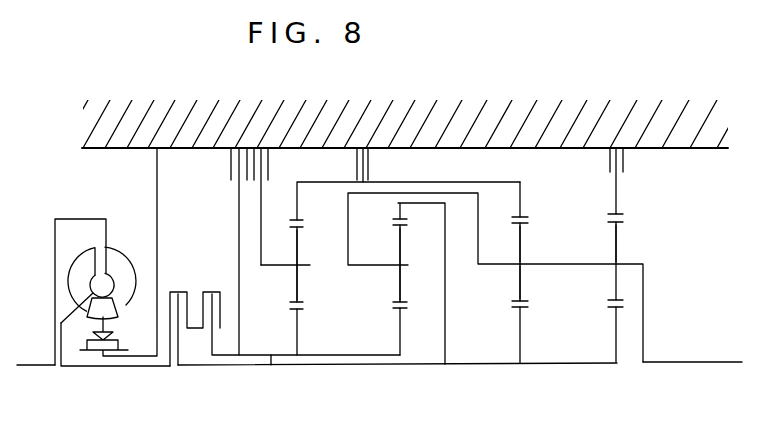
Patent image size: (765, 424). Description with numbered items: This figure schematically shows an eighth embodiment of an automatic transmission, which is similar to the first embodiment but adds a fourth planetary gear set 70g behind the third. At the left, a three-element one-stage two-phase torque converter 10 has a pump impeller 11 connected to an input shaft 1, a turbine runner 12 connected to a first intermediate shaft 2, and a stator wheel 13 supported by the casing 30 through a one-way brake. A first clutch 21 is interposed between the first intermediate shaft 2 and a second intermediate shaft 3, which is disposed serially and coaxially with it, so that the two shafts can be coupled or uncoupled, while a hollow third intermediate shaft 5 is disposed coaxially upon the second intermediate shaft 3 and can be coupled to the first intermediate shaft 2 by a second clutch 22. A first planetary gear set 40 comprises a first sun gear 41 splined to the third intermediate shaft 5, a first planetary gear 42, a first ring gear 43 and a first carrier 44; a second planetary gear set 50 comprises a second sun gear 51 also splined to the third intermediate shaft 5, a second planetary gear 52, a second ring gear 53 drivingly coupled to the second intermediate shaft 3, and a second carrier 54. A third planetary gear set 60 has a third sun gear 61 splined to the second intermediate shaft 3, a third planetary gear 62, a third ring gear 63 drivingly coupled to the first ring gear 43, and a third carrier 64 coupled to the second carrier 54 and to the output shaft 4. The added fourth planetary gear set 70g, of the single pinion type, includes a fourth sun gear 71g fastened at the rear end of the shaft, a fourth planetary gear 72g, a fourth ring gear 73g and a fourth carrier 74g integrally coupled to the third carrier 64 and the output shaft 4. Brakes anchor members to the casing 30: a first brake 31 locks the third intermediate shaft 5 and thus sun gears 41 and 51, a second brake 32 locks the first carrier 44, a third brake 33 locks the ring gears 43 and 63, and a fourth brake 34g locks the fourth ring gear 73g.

The input shaft 1 is at (27, 368).
The first intermediate shaft 2 is at (100, 368).
The second intermediate shaft 3 is at (284, 328).
The output shaft 4 is at (700, 363).
The third intermediate shaft 5 is at (271, 366).
The torque converter 10 is at (126, 259).
The pump impeller 11 is at (117, 285).
The turbine runner 12 is at (83, 277).
The stator wheel 13 is at (88, 307).
The first clutch 21 is at (177, 290).
The second clutch 22 is at (210, 290).
The casing 30 is at (338, 91).
The first brake 31 is at (236, 146).
The second brake 32 is at (259, 146).
The third brake 33 is at (362, 146).
The fourth brake 34g is at (613, 146).
The first planetary gear set 40 is at (388, 293).
The first sun gear 41 is at (298, 318).
The first planetary gear 42 is at (297, 282).
The first ring gear 43 is at (297, 208).
The first carrier 44 is at (273, 266).
The second planetary gear set 50 is at (434, 278).
The second sun gear 51 is at (412, 319).
The second planetary gear 52 is at (400, 268).
The second ring gear 53 is at (402, 211).
The second carrier 54 is at (367, 264).
The third planetary gear set 60 is at (524, 293).
The third sun gear 61 is at (522, 317).
The third planetary gear 62 is at (522, 285).
The third ring gear 63 is at (522, 202).
The third carrier 64 is at (522, 243).
The fourth planetary gear set 70g is at (604, 298).
The fourth sun gear 71g is at (617, 330).
The fourth planetary gear 72g is at (618, 243).
The fourth ring gear 73g is at (618, 202).
The fourth carrier 74g is at (635, 263).